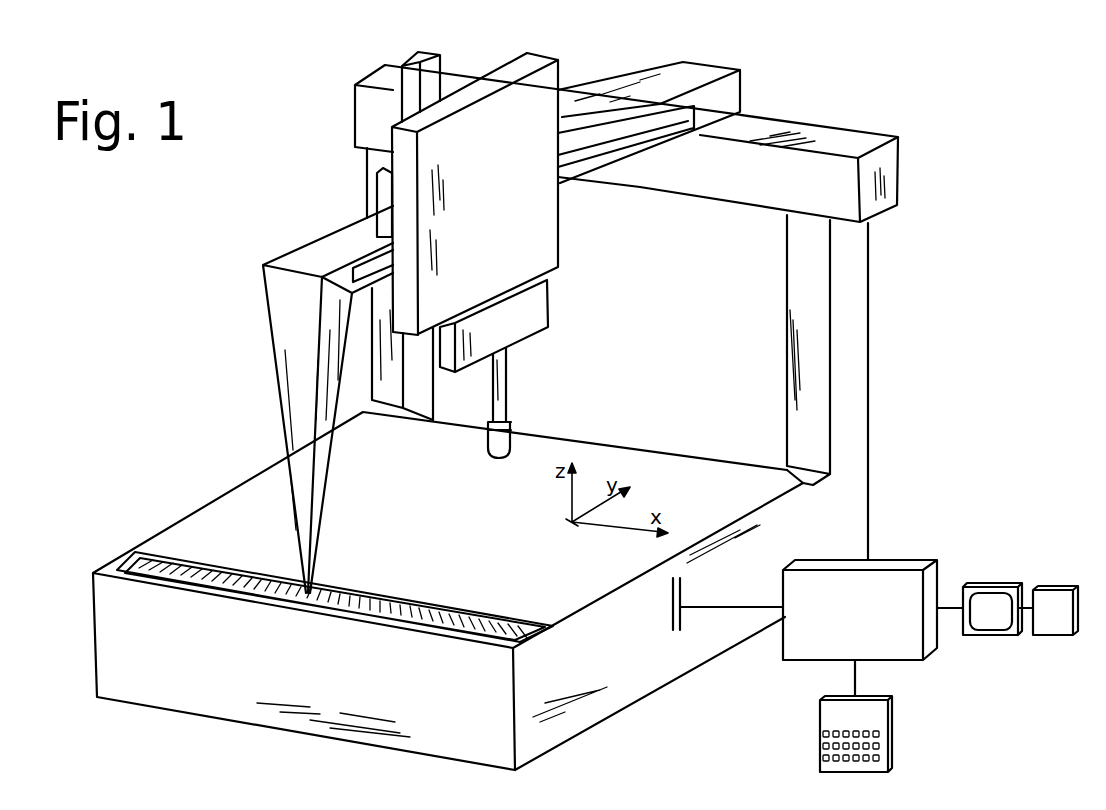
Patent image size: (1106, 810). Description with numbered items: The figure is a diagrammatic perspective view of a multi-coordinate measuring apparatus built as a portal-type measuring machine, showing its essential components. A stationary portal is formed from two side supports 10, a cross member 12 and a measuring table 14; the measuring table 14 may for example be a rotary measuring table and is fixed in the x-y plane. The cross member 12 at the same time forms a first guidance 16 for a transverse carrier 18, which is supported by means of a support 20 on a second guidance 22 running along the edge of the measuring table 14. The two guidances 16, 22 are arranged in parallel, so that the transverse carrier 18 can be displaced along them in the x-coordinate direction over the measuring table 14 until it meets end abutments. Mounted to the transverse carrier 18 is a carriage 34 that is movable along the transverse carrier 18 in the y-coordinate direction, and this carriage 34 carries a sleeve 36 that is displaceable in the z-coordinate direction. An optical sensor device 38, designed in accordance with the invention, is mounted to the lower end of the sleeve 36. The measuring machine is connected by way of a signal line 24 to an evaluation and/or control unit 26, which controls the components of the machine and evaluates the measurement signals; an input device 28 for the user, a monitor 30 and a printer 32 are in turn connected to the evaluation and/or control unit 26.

The side supports 10 is at (380, 158).
The cross member 12 is at (700, 187).
The measuring table 14 is at (603, 577).
The first guidance 16 is at (740, 130).
The transverse carrier 18 is at (625, 118).
The support 20 is at (293, 400).
The second guidance 22 is at (433, 622).
The signal line 24 is at (722, 613).
The evaluation and/or control unit 26 is at (883, 580).
The input device 28 is at (887, 743).
The monitor 30 is at (990, 635).
The printer 32 is at (1050, 603).
The carriage 34 is at (545, 240).
The sleeve 36 is at (533, 308).
The optical sensor device 38 is at (512, 437).